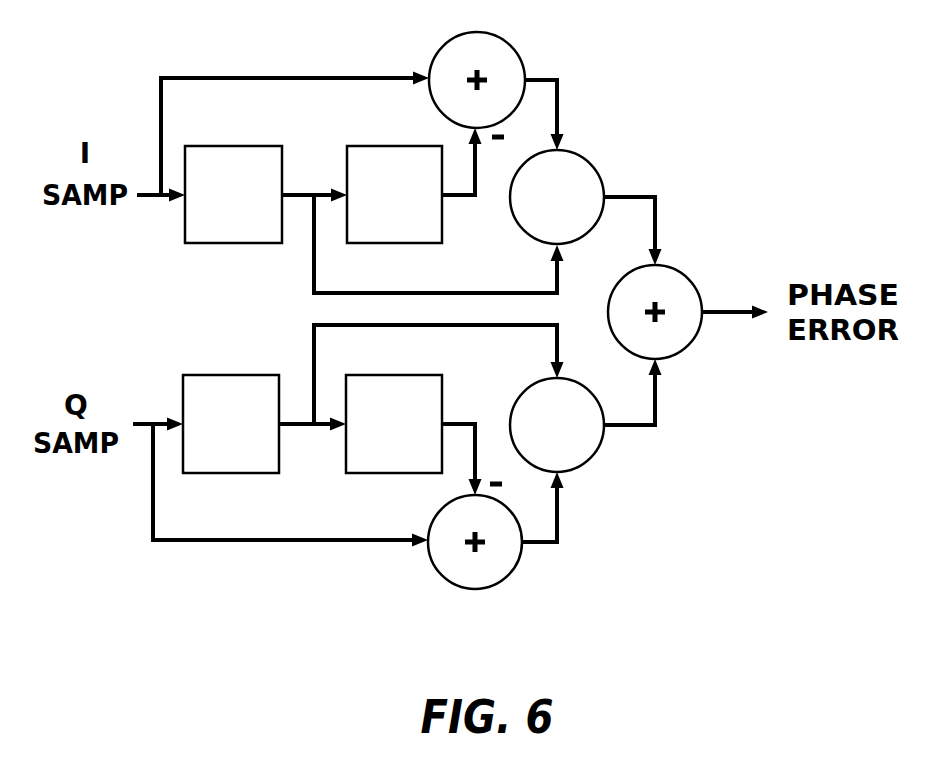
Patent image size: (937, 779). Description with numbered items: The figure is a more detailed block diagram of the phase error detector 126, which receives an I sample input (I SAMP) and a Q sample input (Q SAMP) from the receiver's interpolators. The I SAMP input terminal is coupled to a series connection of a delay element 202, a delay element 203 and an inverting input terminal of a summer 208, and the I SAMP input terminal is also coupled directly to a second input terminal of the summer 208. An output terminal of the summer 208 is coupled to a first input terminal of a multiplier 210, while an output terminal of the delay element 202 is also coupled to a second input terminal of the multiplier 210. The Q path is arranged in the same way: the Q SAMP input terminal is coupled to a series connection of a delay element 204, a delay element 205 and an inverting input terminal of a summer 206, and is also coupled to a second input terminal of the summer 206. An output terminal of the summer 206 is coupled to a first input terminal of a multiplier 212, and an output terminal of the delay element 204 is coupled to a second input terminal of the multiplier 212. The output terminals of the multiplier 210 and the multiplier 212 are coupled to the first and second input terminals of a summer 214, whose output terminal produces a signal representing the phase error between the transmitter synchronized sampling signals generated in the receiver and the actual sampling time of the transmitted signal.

The phase error detector 126 is at (638, 57).
The delay element 202 is at (256, 146).
The delay element 203 is at (418, 146).
The delay element 204 is at (256, 375).
The delay element 205 is at (417, 375).
The summer 206 is at (508, 575).
The summer 208 is at (438, 48).
The multiplier 210 is at (580, 157).
The multiplier 212 is at (580, 466).
The summer 214 is at (677, 270).